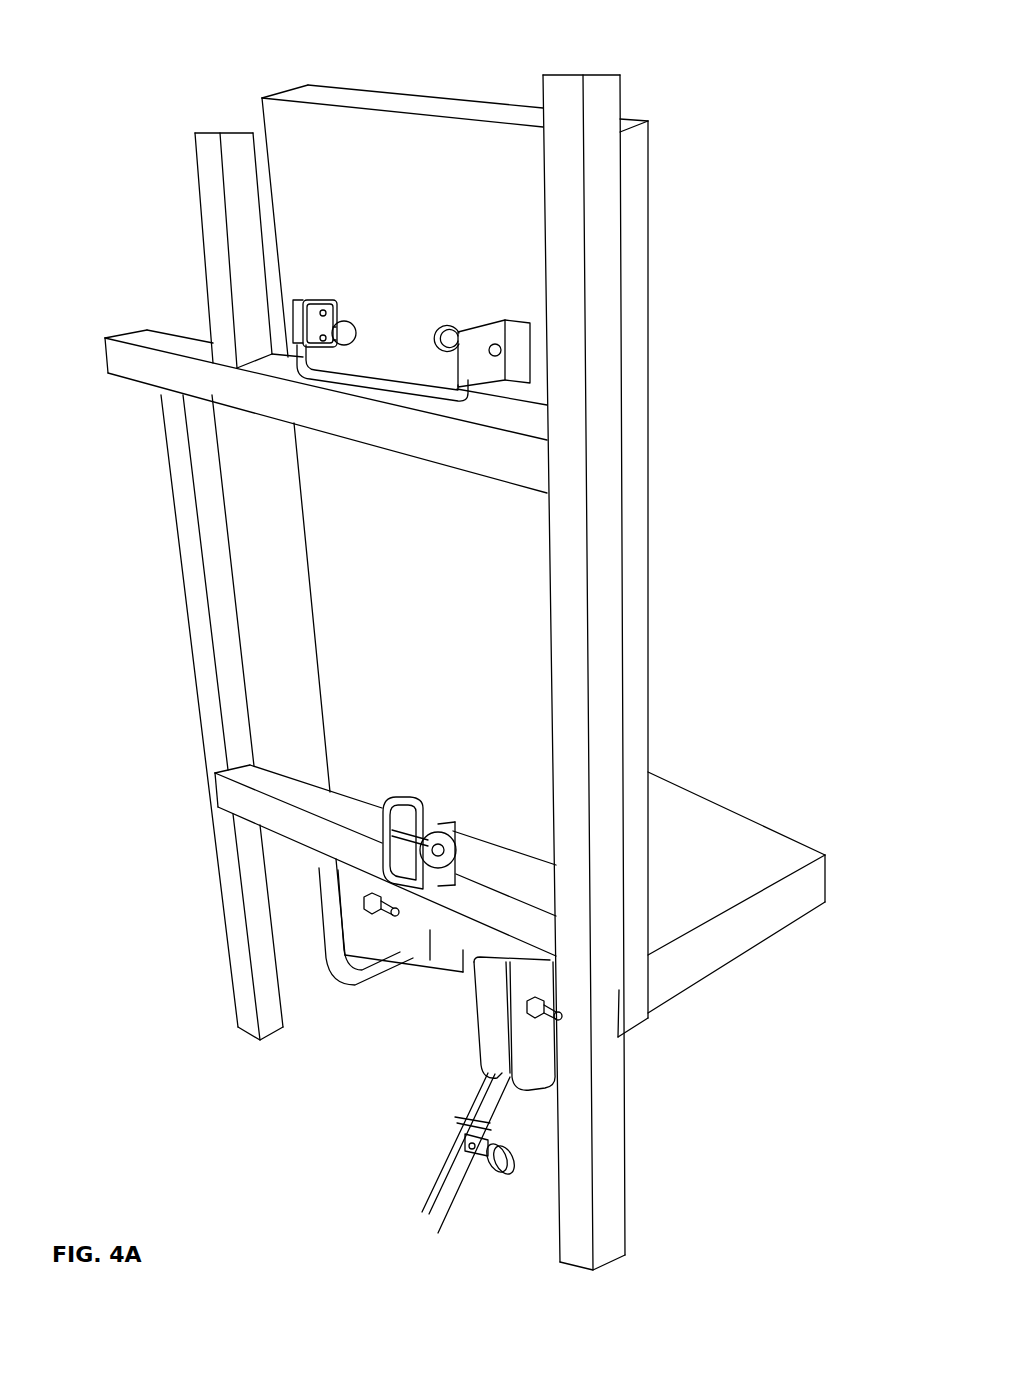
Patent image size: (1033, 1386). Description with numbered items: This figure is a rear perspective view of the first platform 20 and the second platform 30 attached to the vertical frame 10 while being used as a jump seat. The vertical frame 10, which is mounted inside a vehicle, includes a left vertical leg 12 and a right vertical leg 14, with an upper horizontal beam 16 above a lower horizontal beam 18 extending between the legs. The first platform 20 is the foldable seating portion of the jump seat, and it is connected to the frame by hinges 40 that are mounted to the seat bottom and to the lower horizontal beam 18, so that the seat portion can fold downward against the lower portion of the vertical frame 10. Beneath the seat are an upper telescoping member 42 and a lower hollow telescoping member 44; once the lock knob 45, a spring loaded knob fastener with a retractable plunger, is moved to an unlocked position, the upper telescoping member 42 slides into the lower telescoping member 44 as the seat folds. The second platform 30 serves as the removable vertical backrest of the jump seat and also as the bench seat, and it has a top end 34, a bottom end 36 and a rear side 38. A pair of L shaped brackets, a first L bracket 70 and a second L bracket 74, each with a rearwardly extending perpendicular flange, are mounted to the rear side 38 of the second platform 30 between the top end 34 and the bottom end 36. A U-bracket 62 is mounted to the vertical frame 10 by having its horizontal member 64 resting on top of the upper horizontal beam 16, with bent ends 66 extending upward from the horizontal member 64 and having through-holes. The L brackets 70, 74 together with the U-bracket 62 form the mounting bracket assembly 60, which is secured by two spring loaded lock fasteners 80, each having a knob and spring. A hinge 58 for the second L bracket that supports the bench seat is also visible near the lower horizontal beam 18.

The first vertical frame 10 is at (111, 457).
The left vertical leg 12 is at (600, 300).
The right vertical leg 14 is at (190, 573).
The upper horizontal beam 16 is at (147, 340).
The lower horizontal beam 18 is at (243, 802).
The first platform 20 is at (702, 755).
The second platform 30 is at (252, 86).
The top end 34 is at (440, 104).
The bottom end 36 is at (400, 927).
The rear side 38 is at (485, 178).
The hinges for jump seat 40 is at (461, 1029).
The upper telescoping member 42 is at (458, 1084).
The lower telescoping member 44 is at (420, 1144).
The lock knob 45 is at (503, 1163).
The hinge for second L bracket 58 is at (440, 820).
The mounting bracket assembly 60 is at (409, 184).
The U-bracket 62 is at (395, 356).
The horizontal member 64 is at (352, 382).
The bent ends 66 is at (470, 398).
The first L bracket with perpendicular flange 70 is at (497, 330).
The second L bracket with perpendicular flange 74 is at (300, 300).
The spring loaded lock fasteners 80 is at (353, 305).